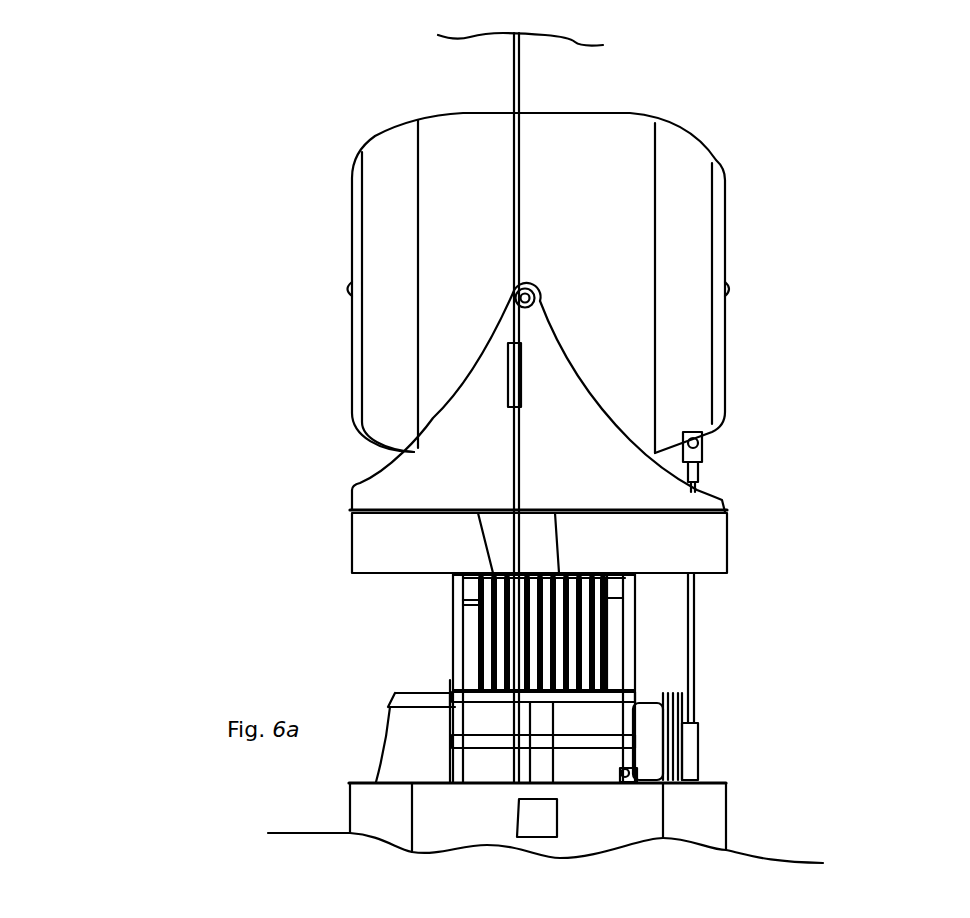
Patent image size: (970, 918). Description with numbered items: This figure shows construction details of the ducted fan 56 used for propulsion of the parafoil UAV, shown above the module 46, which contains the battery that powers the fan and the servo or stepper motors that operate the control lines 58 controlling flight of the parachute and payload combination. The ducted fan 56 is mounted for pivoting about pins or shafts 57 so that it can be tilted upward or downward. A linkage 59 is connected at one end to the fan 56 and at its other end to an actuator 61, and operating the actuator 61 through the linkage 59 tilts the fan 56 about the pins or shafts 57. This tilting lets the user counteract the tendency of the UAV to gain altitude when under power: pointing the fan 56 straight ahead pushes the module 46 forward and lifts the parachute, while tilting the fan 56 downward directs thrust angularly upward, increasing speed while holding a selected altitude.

The module 46 is at (382, 540).
The ducted fan 56 is at (392, 239).
The pins or shafts 57 is at (540, 293).
The control lines 58 is at (512, 457).
The linkage 59 is at (700, 468).
The actuator 61 is at (693, 733).